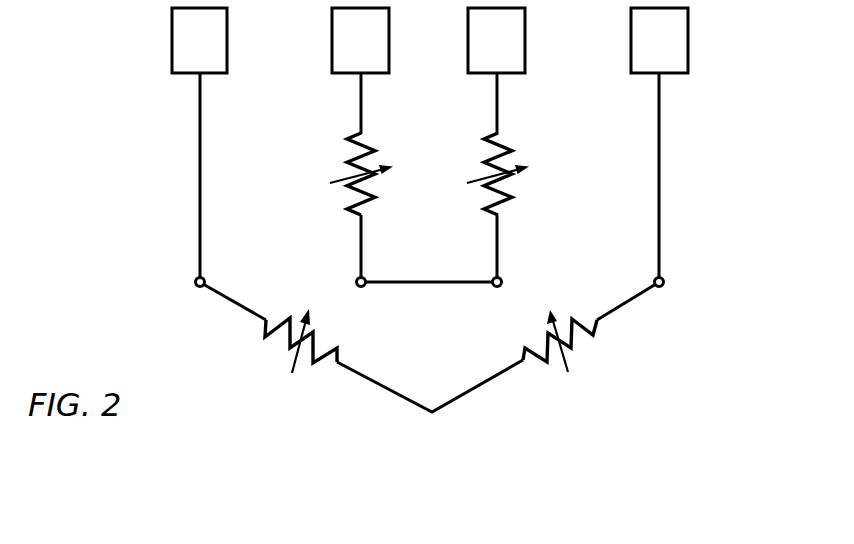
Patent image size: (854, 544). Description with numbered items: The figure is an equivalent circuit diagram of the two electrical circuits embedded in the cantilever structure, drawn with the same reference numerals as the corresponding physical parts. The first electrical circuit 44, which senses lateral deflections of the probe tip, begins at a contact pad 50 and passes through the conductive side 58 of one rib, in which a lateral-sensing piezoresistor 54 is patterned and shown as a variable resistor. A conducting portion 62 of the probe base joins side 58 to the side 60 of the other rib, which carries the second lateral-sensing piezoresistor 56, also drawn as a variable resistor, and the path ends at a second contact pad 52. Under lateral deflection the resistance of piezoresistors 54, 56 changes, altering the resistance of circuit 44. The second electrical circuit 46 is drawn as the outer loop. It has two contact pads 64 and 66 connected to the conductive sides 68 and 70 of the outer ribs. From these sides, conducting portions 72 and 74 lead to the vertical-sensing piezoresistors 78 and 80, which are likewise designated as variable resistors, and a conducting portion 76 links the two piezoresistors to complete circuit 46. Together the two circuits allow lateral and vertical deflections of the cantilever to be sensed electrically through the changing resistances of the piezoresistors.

The contact pad 64 is at (199, 40).
The contact pad 50 is at (360, 40).
The contact pad 52 is at (496, 40).
The contact pad 66 is at (659, 40).
The conductive side 68 is at (200, 100).
The side of rib 58 is at (361, 103).
The side of rib 60 is at (497, 103).
The conductive side 70 is at (659, 172).
The lateral-sensing piezoresistor 54 is at (351, 165).
The lateral-sensing piezoresistor 56 is at (512, 177).
The conducting portion 62 is at (423, 283).
The conducting portion 72 is at (218, 298).
The conducting portion 74 is at (640, 298).
The conducting portion 76 is at (473, 392).
The vertical-sensing piezoresistor 78 is at (288, 342).
The vertical-sensing piezoresistor 80 is at (577, 347).
The second electrical circuit 46 is at (165, 201).
The first electrical circuit 44 is at (560, 238).